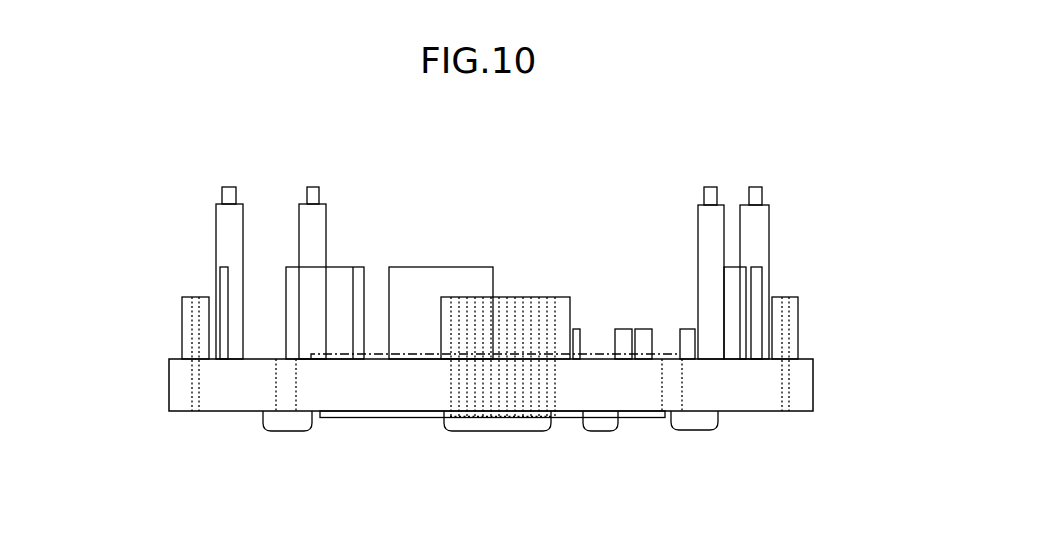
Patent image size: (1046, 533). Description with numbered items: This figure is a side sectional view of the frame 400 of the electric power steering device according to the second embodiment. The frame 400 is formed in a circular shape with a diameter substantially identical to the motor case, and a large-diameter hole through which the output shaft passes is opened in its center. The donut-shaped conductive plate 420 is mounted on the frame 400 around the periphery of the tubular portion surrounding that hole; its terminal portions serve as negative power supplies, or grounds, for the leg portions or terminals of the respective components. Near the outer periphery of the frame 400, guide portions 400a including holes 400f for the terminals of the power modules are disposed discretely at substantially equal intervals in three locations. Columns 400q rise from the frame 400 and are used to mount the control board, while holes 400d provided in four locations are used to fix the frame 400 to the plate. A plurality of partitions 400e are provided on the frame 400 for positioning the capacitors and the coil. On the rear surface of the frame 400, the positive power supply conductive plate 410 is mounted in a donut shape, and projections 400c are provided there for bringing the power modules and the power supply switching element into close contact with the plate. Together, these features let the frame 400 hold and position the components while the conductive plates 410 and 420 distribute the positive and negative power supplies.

The frame 400 is at (813, 359).
The guide portion 400a is at (190, 297).
The projection 400c is at (683, 430).
The hole 400d is at (677, 405).
The partition 400e is at (442, 267).
The hole 400f is at (790, 298).
The column 400q is at (760, 188).
The conductive plate 410 is at (413, 418).
The conductive plate 420 is at (593, 354).